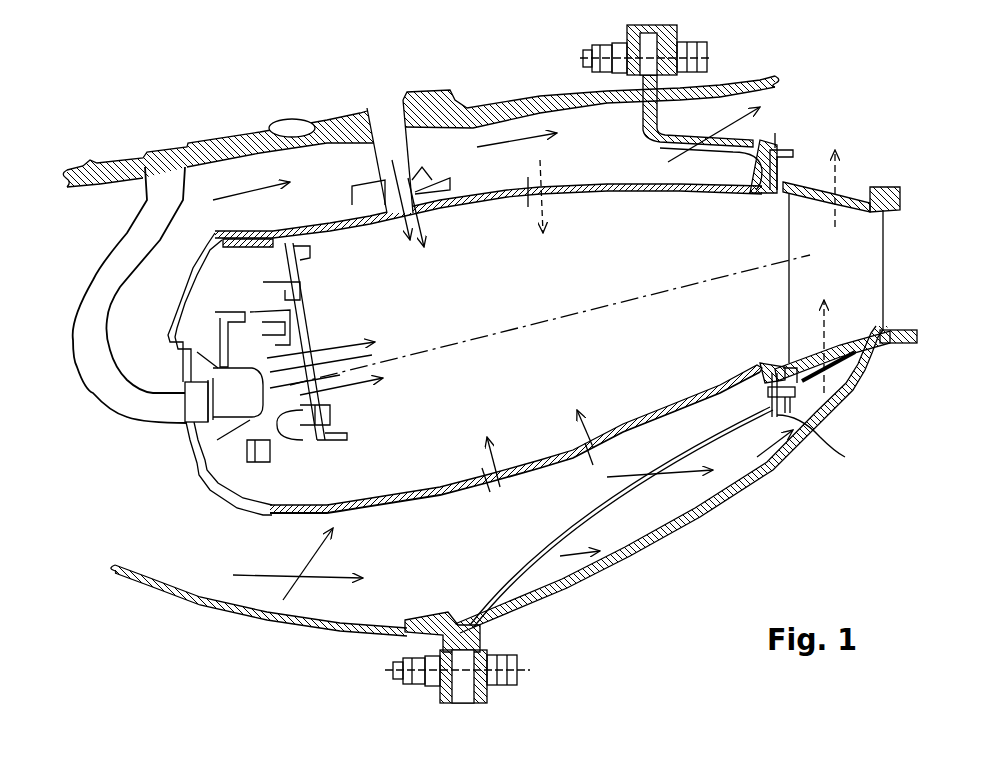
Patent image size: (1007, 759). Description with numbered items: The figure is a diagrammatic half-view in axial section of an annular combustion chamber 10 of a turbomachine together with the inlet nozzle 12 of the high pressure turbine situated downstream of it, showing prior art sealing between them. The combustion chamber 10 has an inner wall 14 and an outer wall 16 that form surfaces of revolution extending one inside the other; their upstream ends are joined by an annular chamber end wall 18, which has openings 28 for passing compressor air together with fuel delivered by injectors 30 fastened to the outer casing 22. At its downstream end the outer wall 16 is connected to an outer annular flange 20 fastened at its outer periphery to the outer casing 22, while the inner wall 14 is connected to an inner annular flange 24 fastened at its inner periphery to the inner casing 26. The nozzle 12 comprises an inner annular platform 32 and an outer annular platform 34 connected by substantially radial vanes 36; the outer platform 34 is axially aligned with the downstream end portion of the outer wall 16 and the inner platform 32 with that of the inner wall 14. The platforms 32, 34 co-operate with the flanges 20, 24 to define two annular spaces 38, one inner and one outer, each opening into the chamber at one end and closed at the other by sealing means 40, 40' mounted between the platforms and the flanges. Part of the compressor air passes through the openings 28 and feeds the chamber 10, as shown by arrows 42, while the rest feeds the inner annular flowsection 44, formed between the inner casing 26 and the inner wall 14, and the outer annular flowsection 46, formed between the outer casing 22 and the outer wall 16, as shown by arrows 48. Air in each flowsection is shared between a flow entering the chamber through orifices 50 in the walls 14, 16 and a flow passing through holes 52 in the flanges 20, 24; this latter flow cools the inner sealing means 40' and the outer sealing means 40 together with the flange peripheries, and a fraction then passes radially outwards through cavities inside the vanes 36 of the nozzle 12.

The annular combustion chamber 10 is at (278, 600).
The inlet nozzle 12 is at (887, 268).
The inner wall 14 is at (667, 407).
The outer wall 16 is at (641, 194).
The annular chamber end wall 18 is at (343, 474).
The outer annular flange 20 is at (643, 134).
The outer casing 22 is at (533, 97).
The inner annular flange 24 is at (480, 597).
The inner casing 26 is at (333, 633).
The openings 28 is at (303, 282).
The injectors 30 is at (127, 253).
The inner annular platform 32 is at (783, 357).
The outer annular platform 34 is at (790, 235).
The vanes 36 is at (777, 250).
The annular spaces 38 is at (768, 200).
The outer sealing means 40 is at (811, 128).
The inner sealing means 40' is at (832, 442).
The arrows 42 is at (347, 340).
The inner annular flowsection 44 is at (321, 562).
The outer annular flowsection 46 is at (270, 197).
The arrows 48 is at (233, 193).
The orifices 50 is at (540, 192).
The holes 52 is at (733, 153).